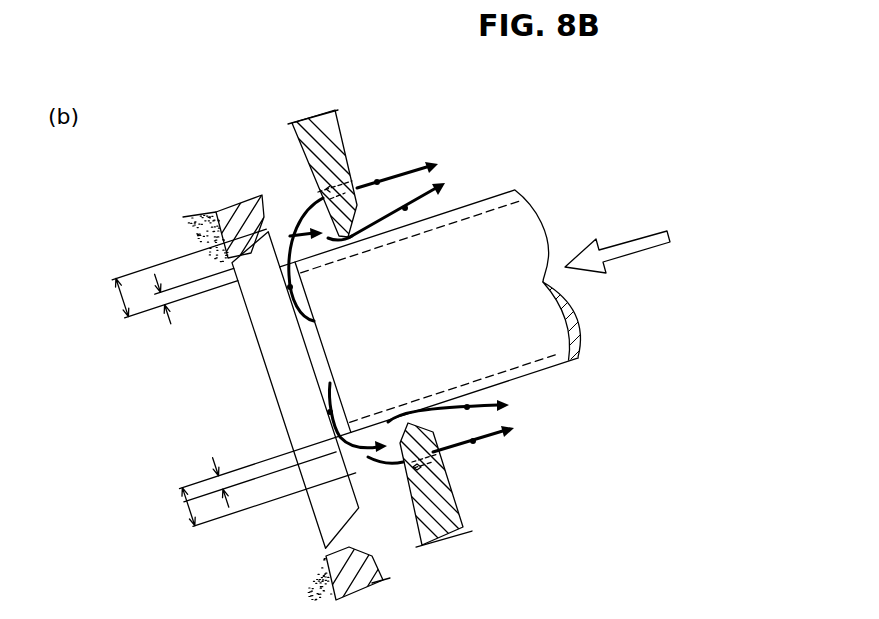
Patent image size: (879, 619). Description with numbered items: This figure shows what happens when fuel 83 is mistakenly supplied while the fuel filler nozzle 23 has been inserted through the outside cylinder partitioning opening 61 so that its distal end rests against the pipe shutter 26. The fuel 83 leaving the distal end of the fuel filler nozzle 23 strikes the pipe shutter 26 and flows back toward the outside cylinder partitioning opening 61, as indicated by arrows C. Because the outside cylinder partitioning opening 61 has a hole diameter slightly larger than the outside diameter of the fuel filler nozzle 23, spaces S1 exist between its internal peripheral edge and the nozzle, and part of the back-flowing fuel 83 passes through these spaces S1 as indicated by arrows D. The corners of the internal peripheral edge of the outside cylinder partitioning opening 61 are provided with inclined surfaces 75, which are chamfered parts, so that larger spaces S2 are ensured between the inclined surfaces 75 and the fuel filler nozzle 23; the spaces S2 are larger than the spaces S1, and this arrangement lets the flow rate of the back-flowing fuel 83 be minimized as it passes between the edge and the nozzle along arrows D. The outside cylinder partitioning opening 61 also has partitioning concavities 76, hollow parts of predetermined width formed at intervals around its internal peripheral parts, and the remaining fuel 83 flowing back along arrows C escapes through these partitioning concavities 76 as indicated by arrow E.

The fuel filler nozzle 23 is at (497, 198).
The pipe shutter 26 is at (318, 502).
The outside cylinder partitioning opening 61 is at (404, 420).
The inclined surfaces (chamfered parts) 75 is at (298, 227).
The partitioning concavities 76 is at (318, 203).
The fuel 83 is at (641, 243).
The arrows C is at (330, 412).
The arrows D is at (412, 221).
The arrow E is at (377, 180).
The spaces S1 is at (162, 302).
The spaces S2 is at (118, 300).